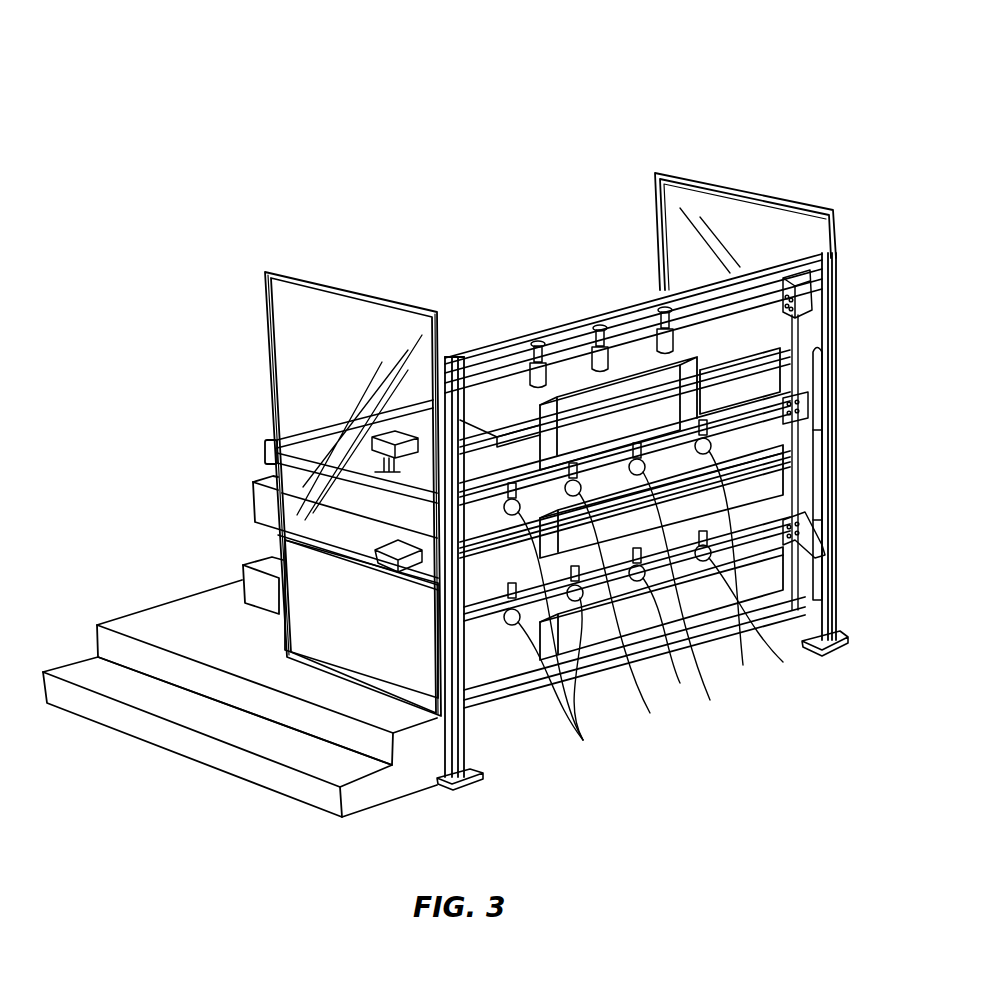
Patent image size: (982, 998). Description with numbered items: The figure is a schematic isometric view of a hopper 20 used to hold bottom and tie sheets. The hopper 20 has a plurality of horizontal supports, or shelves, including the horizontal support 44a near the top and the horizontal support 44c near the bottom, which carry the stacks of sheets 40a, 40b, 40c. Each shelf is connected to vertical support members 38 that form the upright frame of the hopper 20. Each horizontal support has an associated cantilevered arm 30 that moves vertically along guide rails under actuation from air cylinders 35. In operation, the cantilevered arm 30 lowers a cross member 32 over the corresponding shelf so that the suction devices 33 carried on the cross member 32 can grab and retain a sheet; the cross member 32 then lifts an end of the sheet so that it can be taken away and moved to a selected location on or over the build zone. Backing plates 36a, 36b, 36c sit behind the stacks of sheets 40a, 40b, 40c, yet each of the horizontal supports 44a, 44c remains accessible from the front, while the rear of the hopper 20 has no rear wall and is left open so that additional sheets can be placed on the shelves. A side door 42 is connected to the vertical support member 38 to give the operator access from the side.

The hopper 20 is at (686, 98).
The cantilevered arm 30 is at (802, 289).
The cross member 32 is at (763, 330).
The suction devices 33 is at (650, 340).
The air cylinders 35 is at (808, 378).
The backing plate 36a is at (773, 362).
The backing plate 36b is at (745, 480).
The backing plate 36c is at (763, 578).
The vertical support members 38 is at (473, 752).
The stack of sheets 40a is at (488, 407).
The stack of sheets 40b is at (263, 497).
The stack of sheets 40c is at (240, 575).
The side door 42 is at (312, 340).
The horizontal support 44a is at (313, 440).
The horizontal support 44c is at (187, 603).